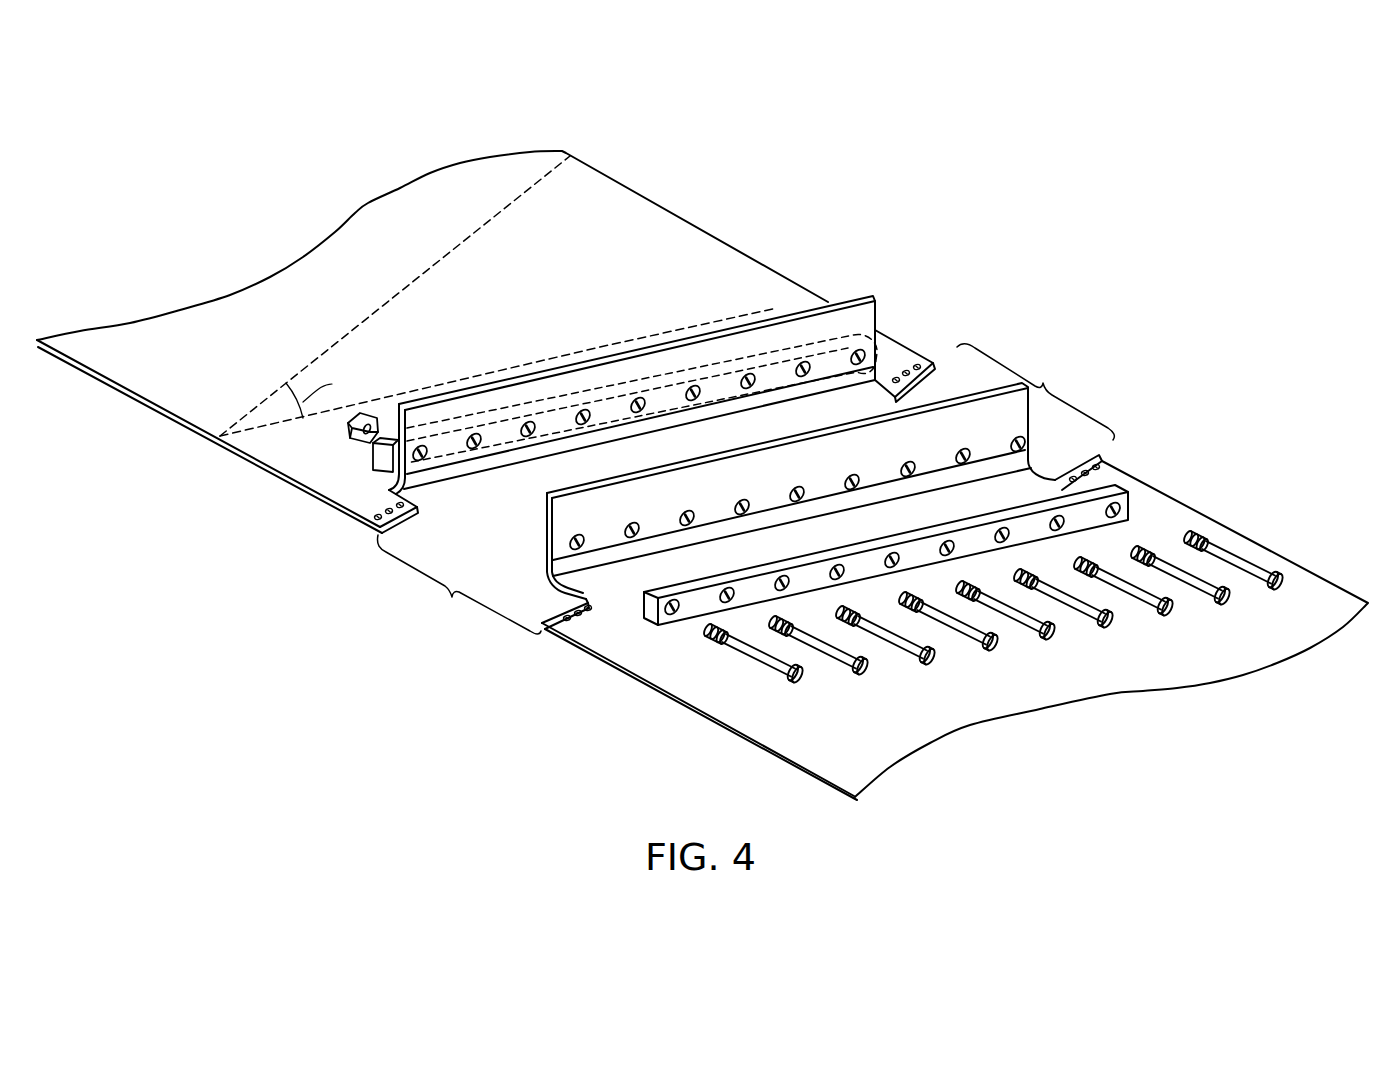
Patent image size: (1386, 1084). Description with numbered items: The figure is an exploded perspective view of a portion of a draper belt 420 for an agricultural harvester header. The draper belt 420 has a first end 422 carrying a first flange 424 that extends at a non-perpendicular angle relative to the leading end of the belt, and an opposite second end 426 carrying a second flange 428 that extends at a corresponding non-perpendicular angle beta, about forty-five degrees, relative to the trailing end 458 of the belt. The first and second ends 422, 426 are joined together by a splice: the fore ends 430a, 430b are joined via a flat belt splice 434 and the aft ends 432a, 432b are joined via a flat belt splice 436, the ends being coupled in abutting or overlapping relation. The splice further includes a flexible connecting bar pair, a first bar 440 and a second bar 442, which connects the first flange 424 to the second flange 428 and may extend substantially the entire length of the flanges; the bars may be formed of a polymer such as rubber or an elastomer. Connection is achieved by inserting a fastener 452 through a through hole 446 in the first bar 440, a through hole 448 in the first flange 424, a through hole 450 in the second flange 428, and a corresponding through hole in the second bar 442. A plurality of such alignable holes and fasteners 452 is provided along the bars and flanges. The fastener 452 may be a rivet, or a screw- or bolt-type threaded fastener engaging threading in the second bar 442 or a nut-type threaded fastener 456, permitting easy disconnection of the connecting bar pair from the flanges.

The draper belt 420 is at (930, 230).
The first end 422 is at (1302, 498).
The first flange 424 is at (568, 508).
The second end 426 is at (745, 200).
The second flange 428 is at (841, 318).
The fore end 430a is at (572, 632).
The fore end 430b is at (374, 520).
The aft end 432a is at (1102, 458).
The aft end 432b is at (918, 358).
The flat belt splice 434 is at (459, 584).
The flat belt splice 436 is at (1035, 392).
The first bar 440 is at (1131, 505).
The second bar 442 is at (373, 456).
The through hole 446 is at (677, 617).
The through hole 448 is at (571, 549).
The through hole 450 is at (424, 463).
The fastener 452 is at (762, 657).
The nut-type threaded fastener 456 is at (365, 414).
The trailing end 458 is at (482, 228).